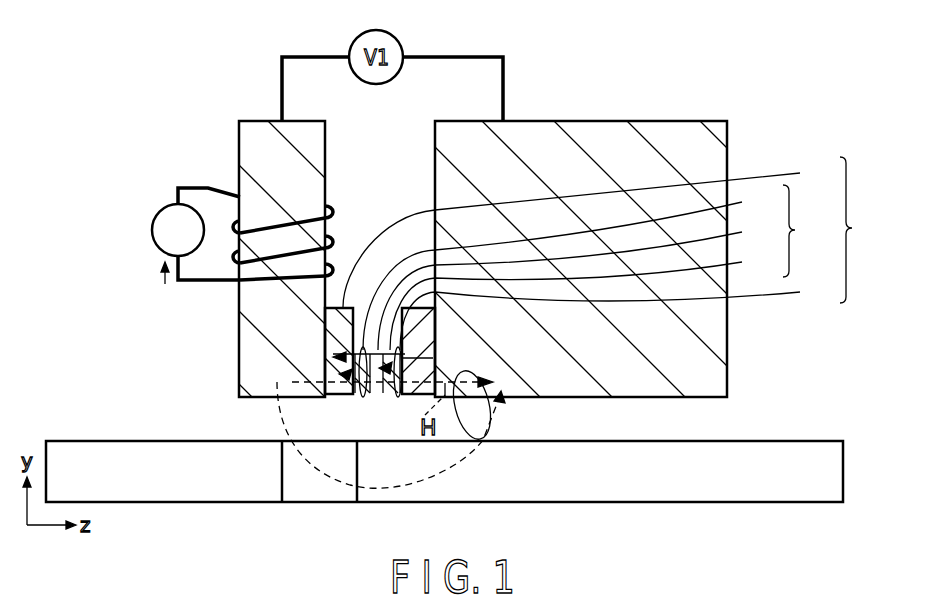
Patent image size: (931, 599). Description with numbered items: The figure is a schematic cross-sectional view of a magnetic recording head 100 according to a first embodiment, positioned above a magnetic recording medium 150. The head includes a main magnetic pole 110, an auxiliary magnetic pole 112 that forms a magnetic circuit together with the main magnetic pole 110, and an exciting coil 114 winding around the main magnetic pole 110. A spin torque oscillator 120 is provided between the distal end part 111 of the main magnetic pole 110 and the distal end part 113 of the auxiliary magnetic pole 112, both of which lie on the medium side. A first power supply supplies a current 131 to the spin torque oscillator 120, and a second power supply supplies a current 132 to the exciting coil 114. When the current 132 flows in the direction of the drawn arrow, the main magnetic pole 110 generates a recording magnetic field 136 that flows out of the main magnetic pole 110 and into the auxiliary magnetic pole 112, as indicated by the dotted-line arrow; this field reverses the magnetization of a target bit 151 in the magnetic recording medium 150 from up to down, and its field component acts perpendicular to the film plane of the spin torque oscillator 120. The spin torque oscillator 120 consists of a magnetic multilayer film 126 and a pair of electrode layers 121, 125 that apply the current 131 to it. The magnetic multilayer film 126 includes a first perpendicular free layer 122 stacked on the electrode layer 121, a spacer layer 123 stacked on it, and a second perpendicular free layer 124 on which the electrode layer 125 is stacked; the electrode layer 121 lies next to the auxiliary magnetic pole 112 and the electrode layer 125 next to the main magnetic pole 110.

The magnetic recording head 100 is at (600, 40).
The main magnetic pole 110 is at (238, 137).
The distal end part of the main magnetic pole 111 is at (242, 374).
The auxiliary magnetic pole 112 is at (728, 141).
The distal end part of the auxiliary magnetic pole 113 is at (710, 358).
The exciting coil 114 is at (268, 215).
The spin torque oscillator 120 is at (865, 230).
The electrode layer 121 is at (619, 314).
The perpendicular free layer (first perpendicular free layer) 122 is at (586, 299).
The spacer layer 123 is at (580, 284).
The perpendicular free layer (second perpendicular free layer) 124 is at (572, 269).
The electrode layer 125 is at (590, 233).
The magnetic multilayer film 126 is at (810, 231).
The current 131 is at (353, 350).
The current 132 is at (172, 283).
The recording magnetic field 136 is at (490, 430).
The magnetic recording medium 150 is at (778, 493).
The target bit 151 is at (314, 493).